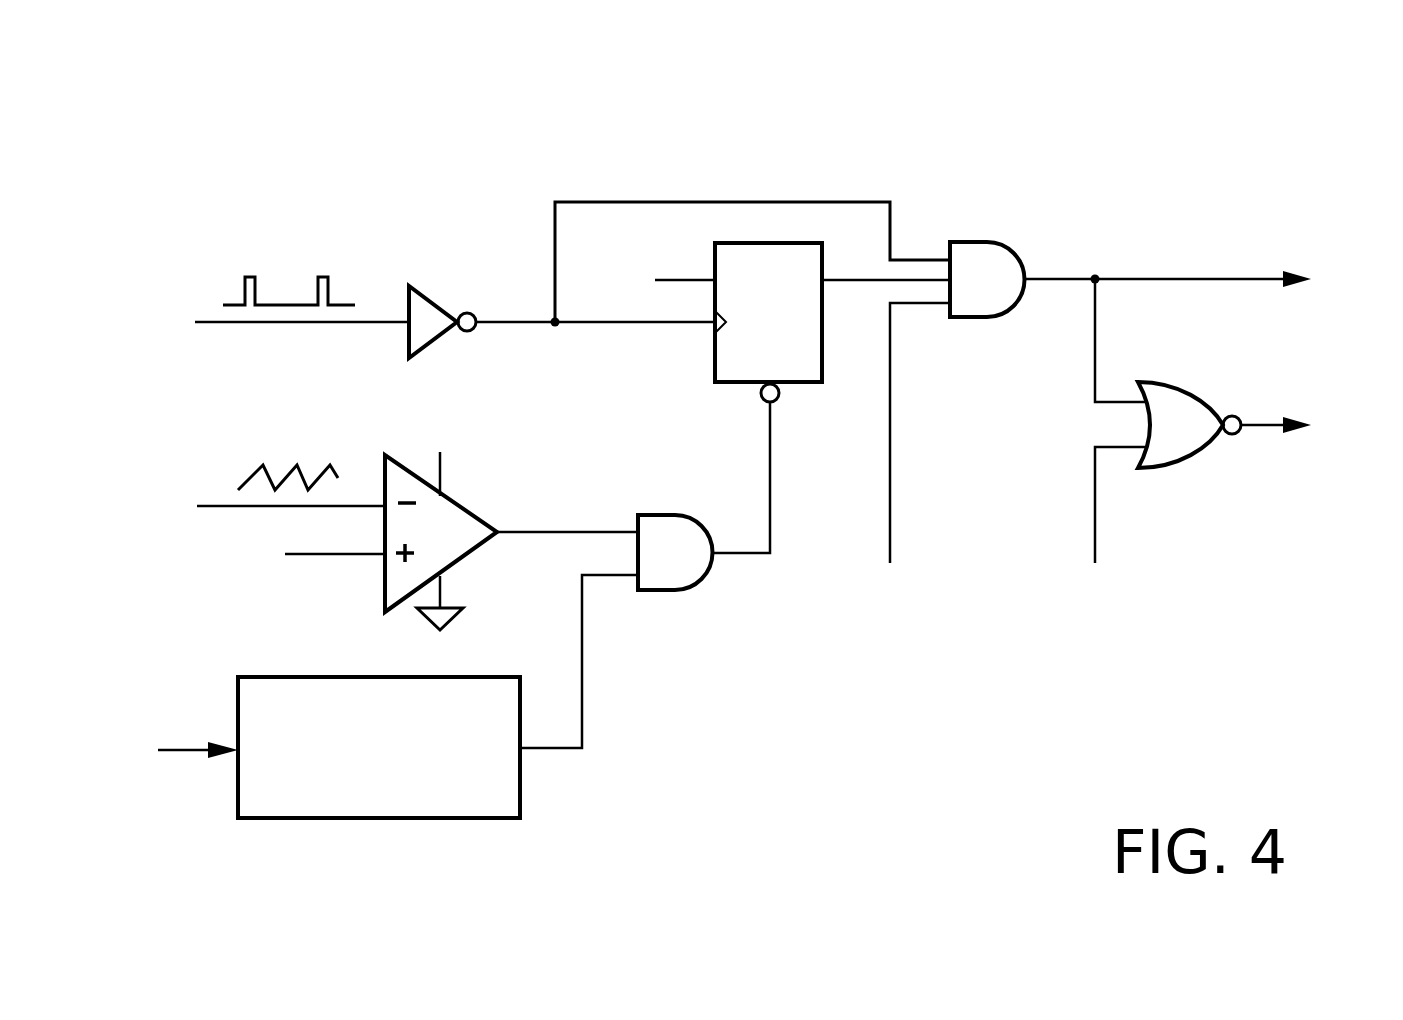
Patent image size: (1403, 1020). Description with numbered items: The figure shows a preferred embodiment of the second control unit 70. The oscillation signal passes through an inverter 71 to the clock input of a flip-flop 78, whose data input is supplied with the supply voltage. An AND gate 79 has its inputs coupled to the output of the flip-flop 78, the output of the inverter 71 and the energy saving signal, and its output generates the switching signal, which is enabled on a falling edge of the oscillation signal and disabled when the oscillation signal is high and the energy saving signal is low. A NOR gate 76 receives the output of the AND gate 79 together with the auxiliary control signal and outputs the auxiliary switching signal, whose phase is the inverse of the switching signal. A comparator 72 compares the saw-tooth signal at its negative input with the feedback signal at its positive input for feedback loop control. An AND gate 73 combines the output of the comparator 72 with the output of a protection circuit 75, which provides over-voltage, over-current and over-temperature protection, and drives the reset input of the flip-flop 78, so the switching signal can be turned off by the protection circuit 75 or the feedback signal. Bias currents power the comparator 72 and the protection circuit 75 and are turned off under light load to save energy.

The second control unit 70 is at (1342, 80).
The inverter 71 is at (438, 292).
The comparator 72 is at (470, 562).
The AND gate 73 is at (672, 596).
The protection circuit 75 is at (437, 822).
The NOR gate 76 is at (1180, 472).
The flip-flop 78 is at (805, 392).
The AND gate 79 is at (984, 236).